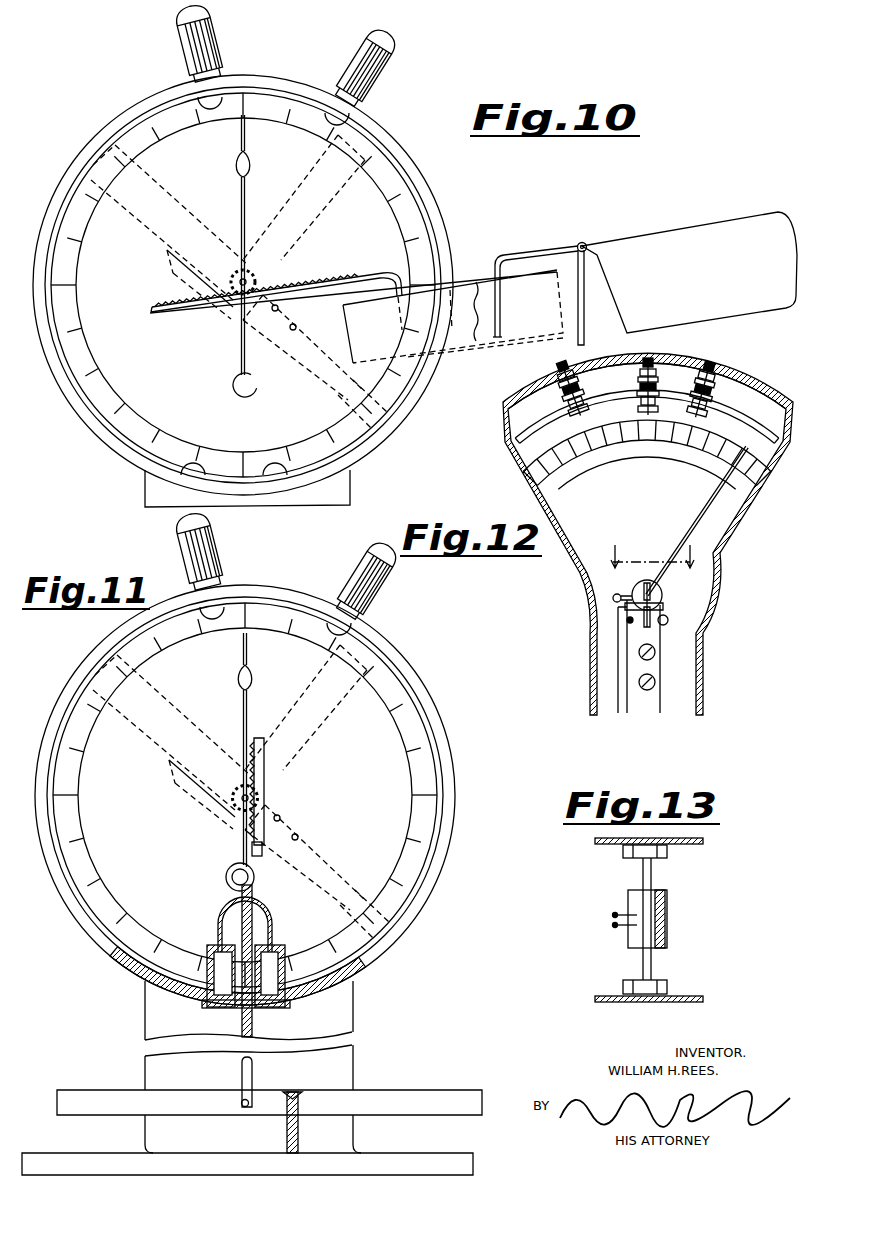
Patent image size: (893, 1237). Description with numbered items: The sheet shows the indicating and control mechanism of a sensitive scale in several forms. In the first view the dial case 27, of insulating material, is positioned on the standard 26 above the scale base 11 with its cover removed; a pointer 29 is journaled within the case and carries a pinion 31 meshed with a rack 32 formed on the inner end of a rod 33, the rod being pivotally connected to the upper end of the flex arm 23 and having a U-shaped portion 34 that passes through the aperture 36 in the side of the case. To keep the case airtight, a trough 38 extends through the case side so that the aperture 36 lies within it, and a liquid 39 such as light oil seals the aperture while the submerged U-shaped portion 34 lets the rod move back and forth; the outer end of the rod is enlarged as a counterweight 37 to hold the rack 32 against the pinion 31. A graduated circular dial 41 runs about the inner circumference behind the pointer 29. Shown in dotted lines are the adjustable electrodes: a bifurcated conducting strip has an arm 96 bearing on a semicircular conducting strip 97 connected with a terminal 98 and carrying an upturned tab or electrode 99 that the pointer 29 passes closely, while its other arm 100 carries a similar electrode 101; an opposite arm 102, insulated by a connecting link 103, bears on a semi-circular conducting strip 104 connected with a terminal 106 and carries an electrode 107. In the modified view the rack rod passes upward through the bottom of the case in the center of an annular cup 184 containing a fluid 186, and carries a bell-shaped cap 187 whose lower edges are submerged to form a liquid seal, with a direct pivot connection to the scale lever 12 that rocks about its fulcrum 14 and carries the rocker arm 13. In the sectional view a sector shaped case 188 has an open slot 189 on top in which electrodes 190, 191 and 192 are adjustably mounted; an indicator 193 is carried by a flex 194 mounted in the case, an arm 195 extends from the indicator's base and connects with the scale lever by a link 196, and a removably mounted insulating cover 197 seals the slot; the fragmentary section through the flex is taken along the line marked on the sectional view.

In FIG. 11, the base 11 is at (247, 1153).
In FIG. 11, the lever 12 is at (269, 1093).
In FIG. 12, the rocker arm 13 is at (656, 561).
In FIG. 11, the fulcrum 14 is at (306, 1122).
In FIG. 10, the flex arm 23 is at (588, 300).
In FIG. 10, the standard 26 is at (347, 487).
In FIG. 11, the standard 26 is at (266, 1067).
In FIG. 10, the dial case 27 is at (243, 285).
In FIG. 11, the dial case 27 is at (261, 795).
In FIG. 10, the pointer 29 is at (226, 256).
In FIG. 11, the pointer 29 is at (266, 750).
In FIG. 10, the pinion 31 is at (255, 267).
In FIG. 11, the pinion 31 is at (271, 798).
In FIG. 10, the rack 32 is at (267, 284).
In FIG. 11, the rack 32 is at (227, 791).
In FIG. 10, the rod 33 is at (384, 270).
In FIG. 11, the rod 33 is at (276, 852).
In FIG. 10, the U-shaped portion 34 is at (497, 340).
In FIG. 10, the aperture 36 is at (445, 353).
In FIG. 10, the counterweight 37 is at (717, 266).
In FIG. 10, the trough 38 is at (477, 286).
In FIG. 10, the liquid 39 is at (523, 323).
In FIG. 10, the graduated circular dial 41 is at (243, 285).
In FIG. 11, the graduated circular dial 41 is at (245, 795).
In FIG. 10, the arm 96 is at (162, 240).
In FIG. 11, the arm 96 is at (164, 750).
In FIG. 10, the semicircular conducting strip 97 is at (243, 285).
In FIG. 11, the semicircular conducting strip 97 is at (242, 795).
In FIG. 10, the terminal 98 is at (211, 42).
In FIG. 11, the terminal 98 is at (212, 550).
In FIG. 10, the tab or electrode 99 is at (170, 205).
In FIG. 11, the tab or electrode 99 is at (172, 715).
In FIG. 10, the arm 100 is at (290, 197).
In FIG. 11, the arm 100 is at (292, 707).
In FIG. 10, the tab or electrode 101 is at (323, 197).
In FIG. 11, the tab or electrode 101 is at (333, 707).
In FIG. 10, the arm 102 is at (303, 347).
In FIG. 11, the arm 102 is at (313, 857).
In FIG. 10, the insulating connecting link 103 is at (189, 284).
In FIG. 11, the insulating connecting link 103 is at (196, 794).
In FIG. 10, the semi-circular conducting strip 104 is at (243, 285).
In FIG. 11, the semi-circular conducting strip 104 is at (245, 795).
In FIG. 10, the terminal 106 is at (378, 67).
In FIG. 11, the terminal 106 is at (375, 580).
In FIG. 10, the tab or electrode 107 is at (350, 405).
In FIG. 11, the tab or electrode 107 is at (373, 893).
In FIG. 11, the annular cup 184 is at (274, 961).
In FIG. 11, the fluid 186 is at (267, 976).
In FIG. 11, the bell-shaped cap 187 is at (271, 882).
In FIG. 12, the sector shaped case 188 is at (723, 553).
In FIG. 13, the sector shaped case 188 is at (618, 843).
In FIG. 12, the open slot 189 is at (540, 427).
In FIG. 12, the electrode 190 is at (708, 422).
In FIG. 12, the electrode 191 is at (640, 413).
In FIG. 12, the electrode 192 is at (578, 427).
In FIG. 12, the indicator 193 is at (703, 510).
In FIG. 13, the indicator 193 is at (670, 937).
In FIG. 12, the flex 194 is at (650, 597).
In FIG. 13, the flex 194 is at (652, 872).
In FIG. 12, the arm 195 is at (623, 593).
In FIG. 13, the arm 195 is at (615, 926).
In FIG. 12, the link 196 is at (618, 677).
In FIG. 13, the link 196 is at (614, 914).
In FIG. 12, the cover 197 is at (747, 369).